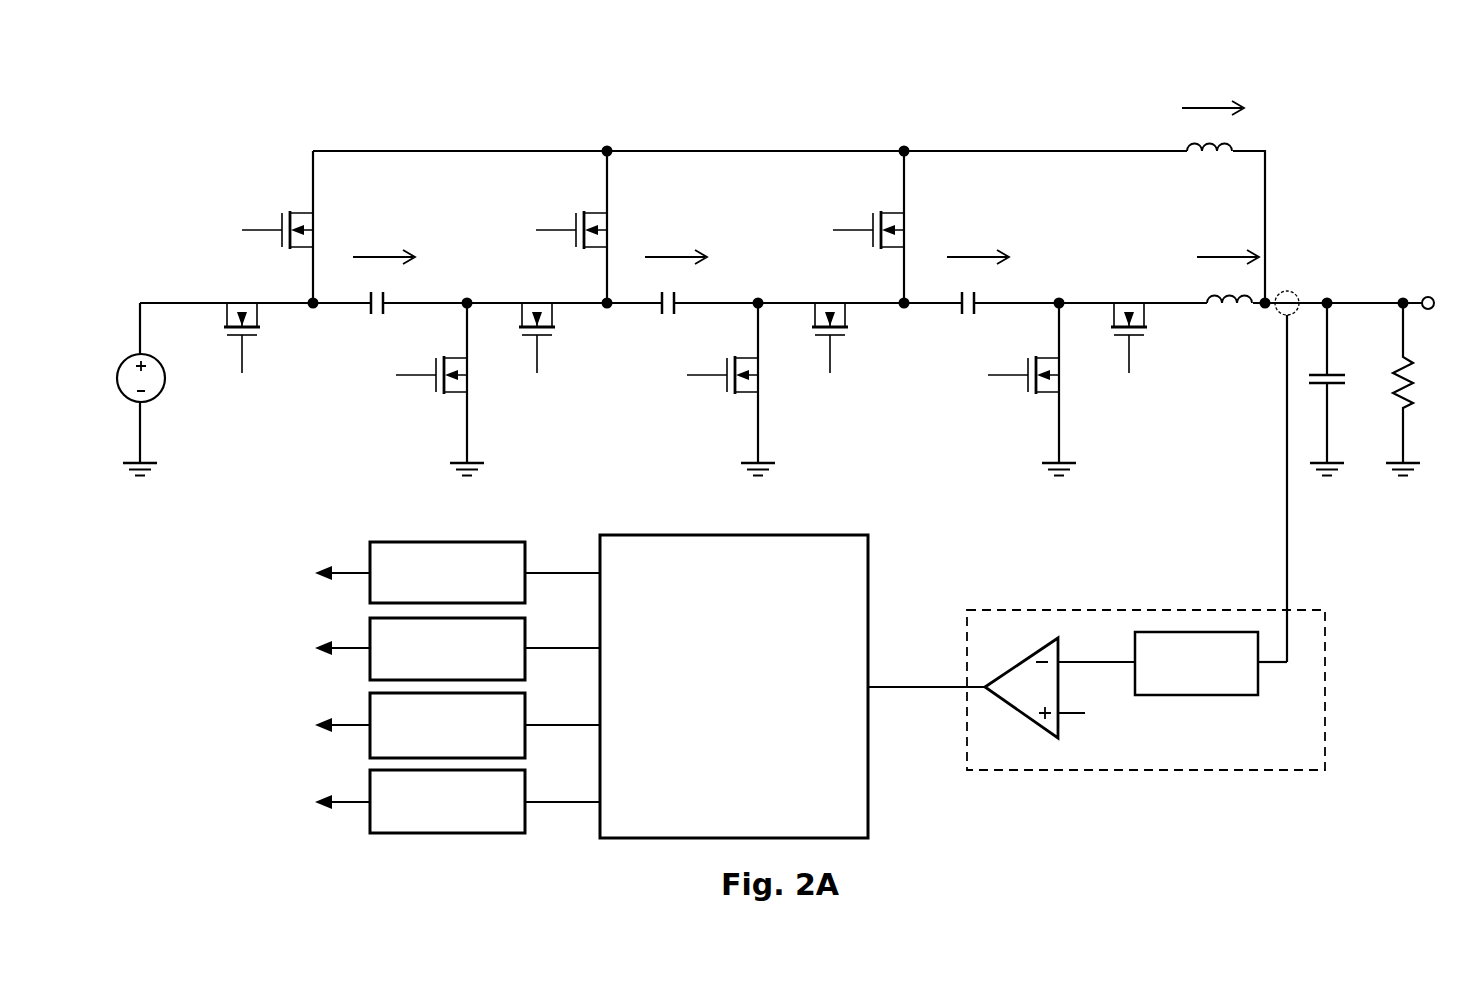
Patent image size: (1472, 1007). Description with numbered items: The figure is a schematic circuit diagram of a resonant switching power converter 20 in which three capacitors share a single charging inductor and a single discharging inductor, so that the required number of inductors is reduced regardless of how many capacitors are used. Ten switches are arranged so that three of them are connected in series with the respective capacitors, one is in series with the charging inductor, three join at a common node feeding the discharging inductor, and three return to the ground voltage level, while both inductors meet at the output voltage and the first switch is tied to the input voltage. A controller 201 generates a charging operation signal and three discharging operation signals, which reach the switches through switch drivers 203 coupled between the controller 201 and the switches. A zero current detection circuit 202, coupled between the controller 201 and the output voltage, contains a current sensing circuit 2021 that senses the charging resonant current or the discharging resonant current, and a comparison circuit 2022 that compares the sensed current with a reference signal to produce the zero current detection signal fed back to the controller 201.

The resonant switching power converter 20 is at (1335, 153).
The controller 201 is at (710, 723).
The zero current detection circuit 202 is at (1268, 753).
The switch driver 203 is at (457, 687).
The current sensing circuit 2021 is at (1152, 632).
The comparison circuit 2022 is at (996, 680).